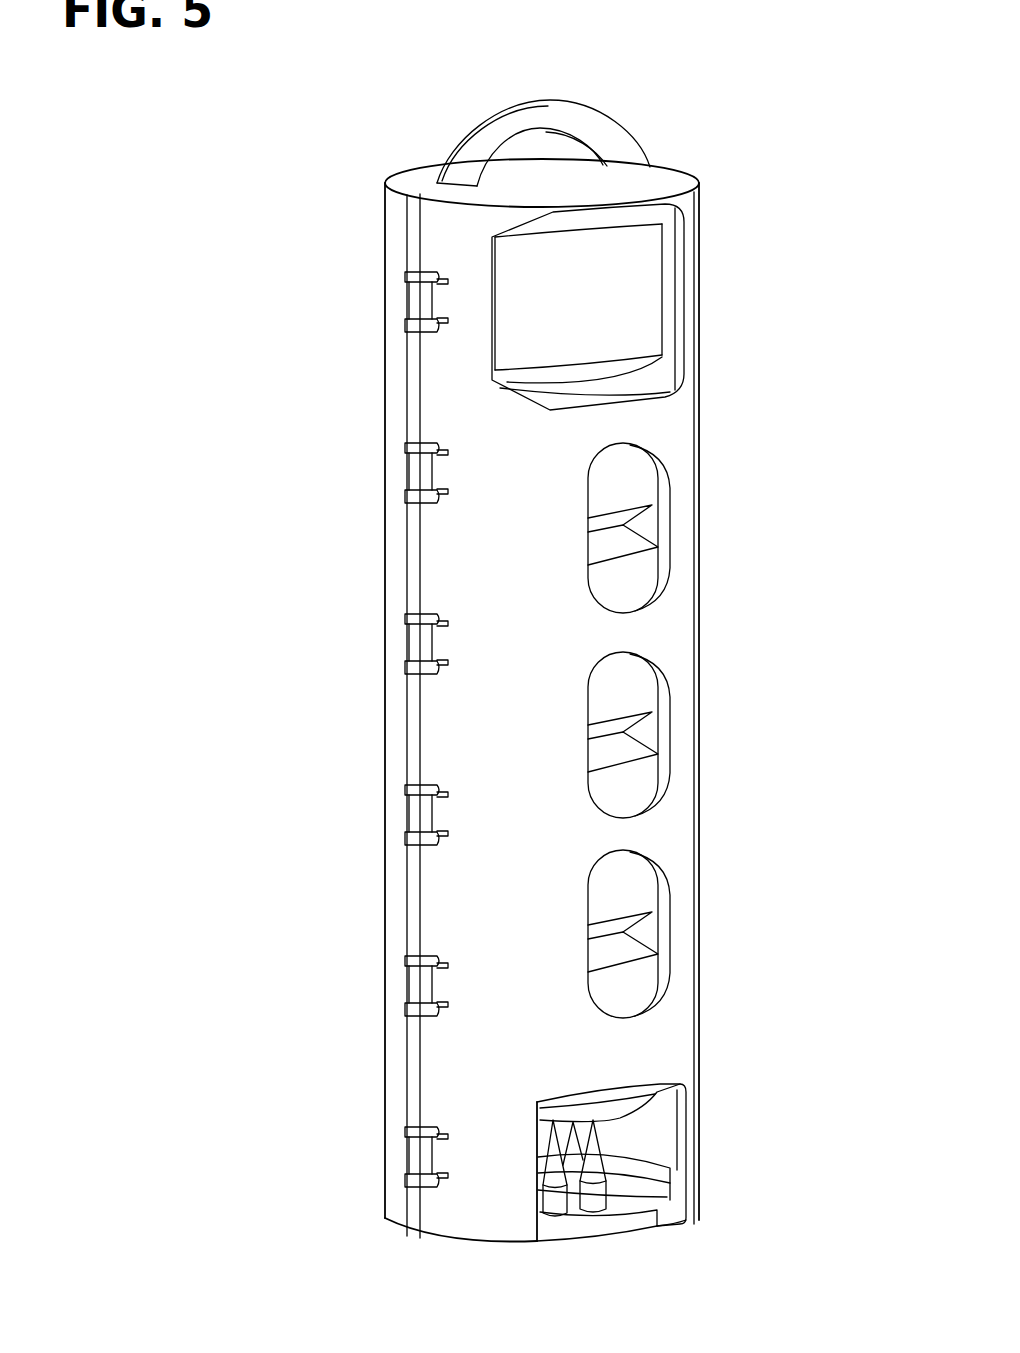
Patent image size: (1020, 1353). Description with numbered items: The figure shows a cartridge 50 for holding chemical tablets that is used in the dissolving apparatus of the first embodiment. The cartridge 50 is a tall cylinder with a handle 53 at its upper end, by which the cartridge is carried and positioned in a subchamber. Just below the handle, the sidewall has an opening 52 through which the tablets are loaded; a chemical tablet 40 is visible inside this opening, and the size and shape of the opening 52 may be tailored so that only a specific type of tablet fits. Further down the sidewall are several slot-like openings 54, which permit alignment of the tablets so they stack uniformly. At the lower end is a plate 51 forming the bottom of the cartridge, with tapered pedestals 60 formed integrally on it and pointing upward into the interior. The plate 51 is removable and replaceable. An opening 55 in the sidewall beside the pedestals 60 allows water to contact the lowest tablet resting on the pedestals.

The cartridge 50 is at (777, 178).
The handle 53 is at (542, 112).
The opening 52 is at (670, 348).
The chemical tablet 40 is at (633, 303).
The openings 54 is at (650, 520).
The opening 55 is at (647, 1185).
The pedestals 60 is at (553, 1200).
The plate 51 is at (615, 1235).